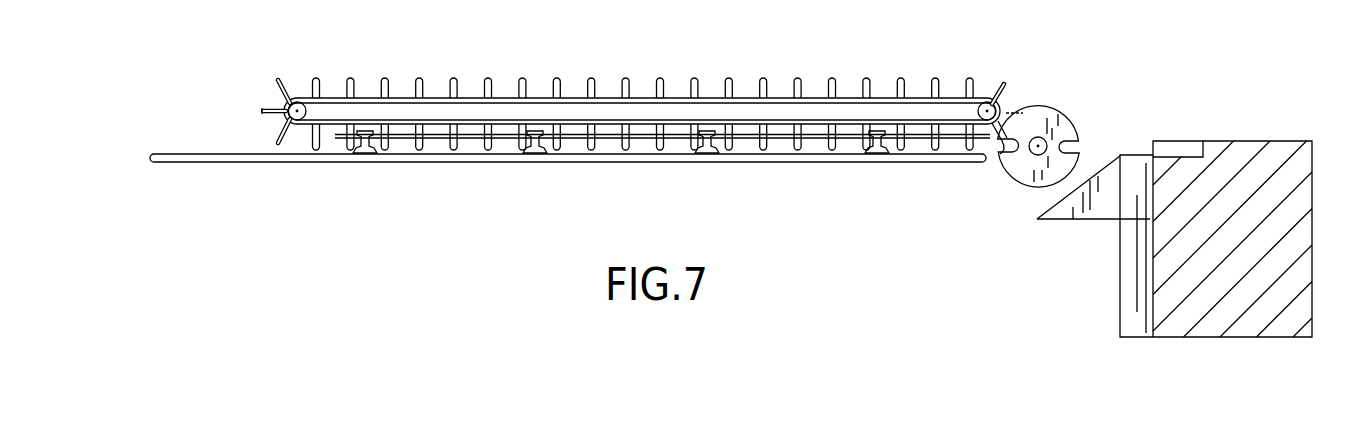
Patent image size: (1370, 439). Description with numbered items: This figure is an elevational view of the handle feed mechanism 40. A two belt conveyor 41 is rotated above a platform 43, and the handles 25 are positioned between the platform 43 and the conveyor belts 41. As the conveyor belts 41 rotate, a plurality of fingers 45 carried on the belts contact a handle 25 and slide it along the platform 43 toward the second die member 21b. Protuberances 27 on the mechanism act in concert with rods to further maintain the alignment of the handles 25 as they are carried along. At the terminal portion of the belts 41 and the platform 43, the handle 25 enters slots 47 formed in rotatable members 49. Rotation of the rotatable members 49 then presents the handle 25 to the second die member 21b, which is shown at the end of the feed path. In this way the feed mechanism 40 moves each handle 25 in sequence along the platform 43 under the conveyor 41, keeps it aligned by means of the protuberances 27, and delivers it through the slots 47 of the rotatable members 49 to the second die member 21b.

The handle feed mechanism 40 is at (829, 50).
The conveyor belt 41 is at (737, 98).
The fingers 45 is at (385, 80).
The protuberances 27 is at (707, 131).
The handle 25 is at (365, 153).
The platform 43 is at (268, 163).
The slots 47 is at (1002, 158).
The rotatable members 49 is at (1040, 112).
The second die member 21b is at (1220, 141).